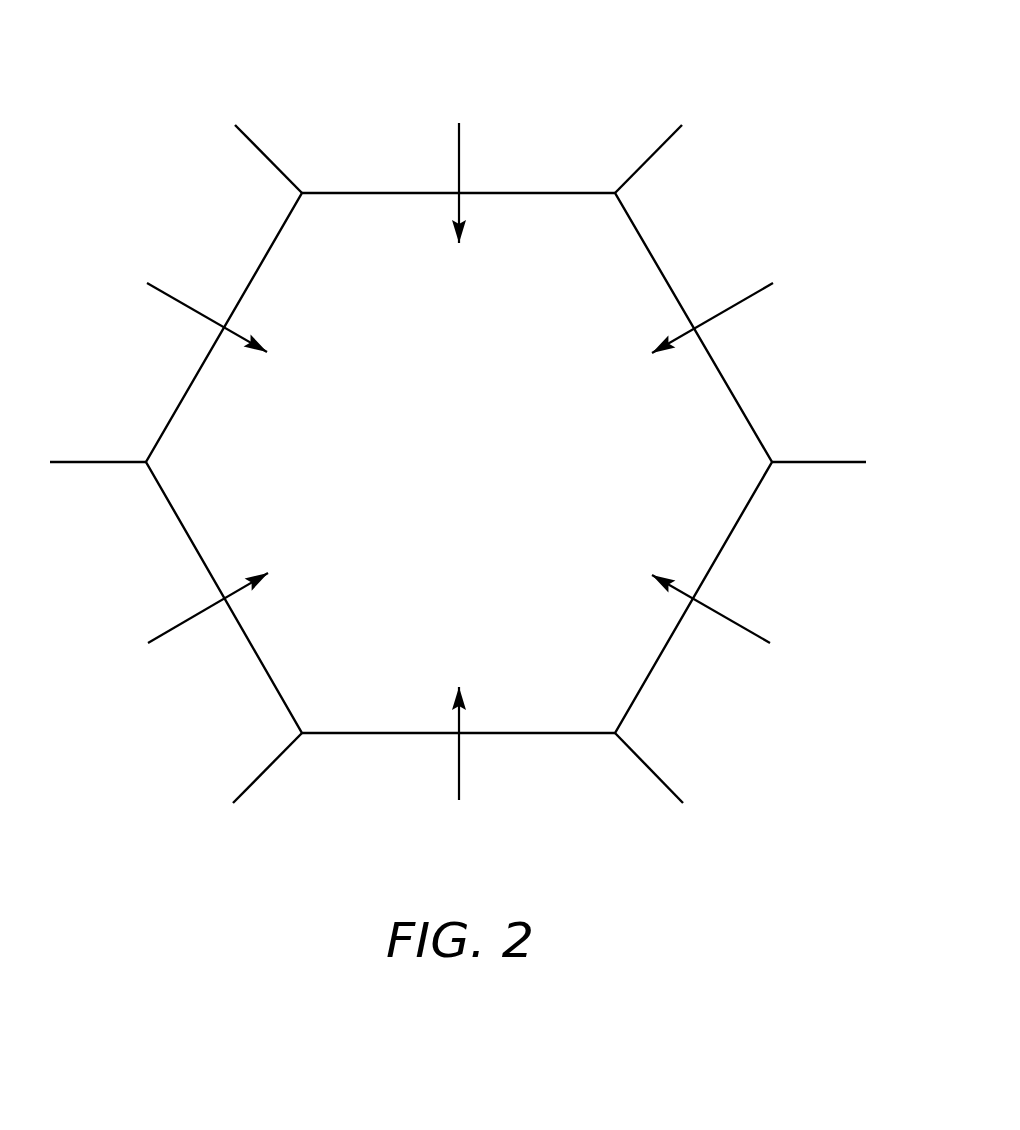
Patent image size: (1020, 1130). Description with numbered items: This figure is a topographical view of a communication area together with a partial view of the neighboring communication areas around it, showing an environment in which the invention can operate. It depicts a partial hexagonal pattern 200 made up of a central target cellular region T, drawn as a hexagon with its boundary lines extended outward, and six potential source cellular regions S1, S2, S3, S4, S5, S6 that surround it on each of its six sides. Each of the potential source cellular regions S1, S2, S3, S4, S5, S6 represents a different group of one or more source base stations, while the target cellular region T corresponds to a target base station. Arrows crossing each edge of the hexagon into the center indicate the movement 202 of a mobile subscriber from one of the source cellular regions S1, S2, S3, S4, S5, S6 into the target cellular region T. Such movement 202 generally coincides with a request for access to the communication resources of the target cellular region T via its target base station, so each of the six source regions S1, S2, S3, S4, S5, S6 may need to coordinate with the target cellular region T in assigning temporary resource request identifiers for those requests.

The partial hexagonal pattern 200 is at (849, 63).
The movement 202 is at (459, 464).
The target cellular region T is at (458, 464).
The potential source cellular region S1 is at (188, 308).
The potential source cellular region S2 is at (459, 166).
The potential source cellular region S3 is at (729, 308).
The potential source cellular region S4 is at (730, 620).
The potential source cellular region S5 is at (459, 763).
The potential source cellular region S6 is at (190, 621).